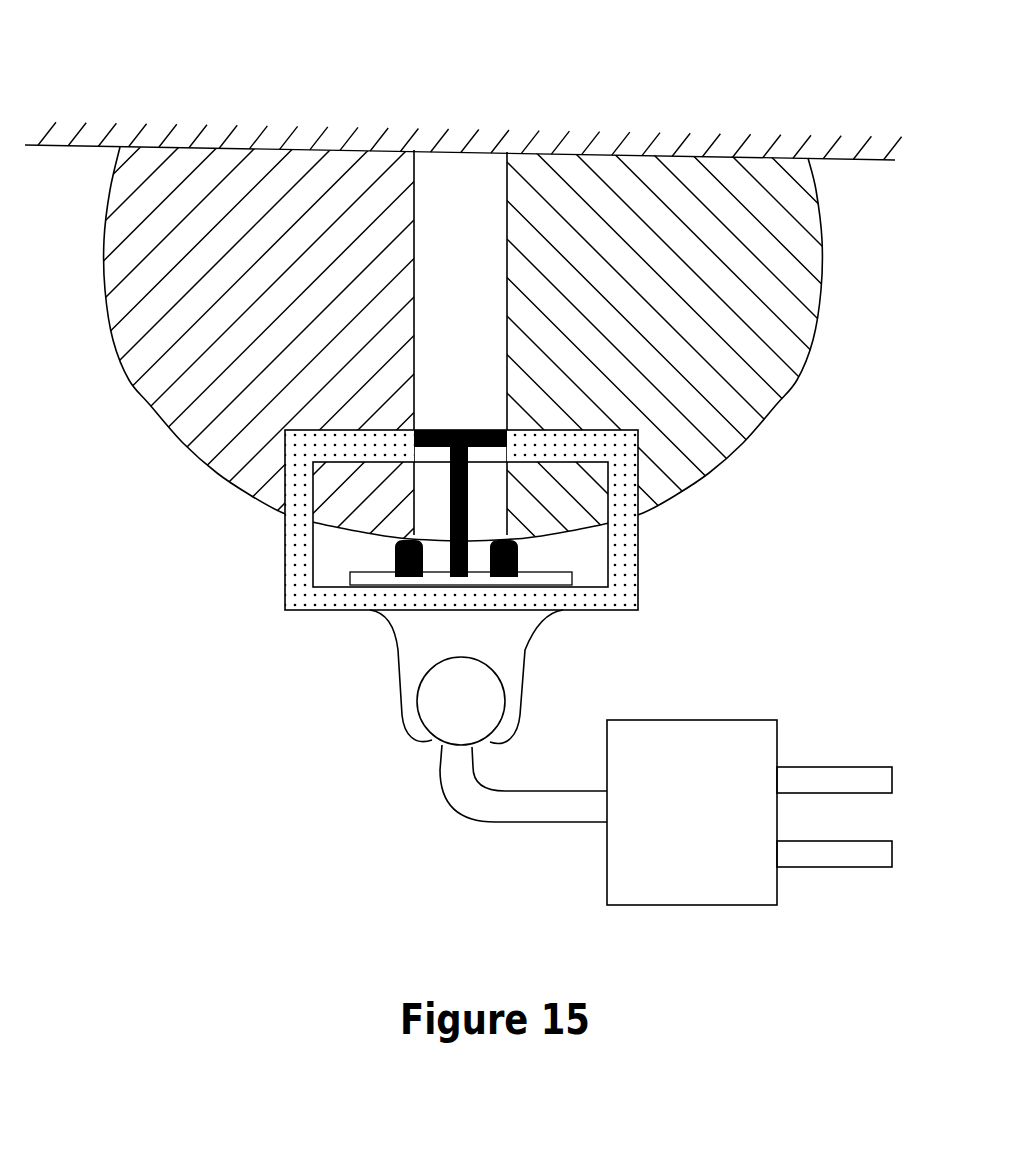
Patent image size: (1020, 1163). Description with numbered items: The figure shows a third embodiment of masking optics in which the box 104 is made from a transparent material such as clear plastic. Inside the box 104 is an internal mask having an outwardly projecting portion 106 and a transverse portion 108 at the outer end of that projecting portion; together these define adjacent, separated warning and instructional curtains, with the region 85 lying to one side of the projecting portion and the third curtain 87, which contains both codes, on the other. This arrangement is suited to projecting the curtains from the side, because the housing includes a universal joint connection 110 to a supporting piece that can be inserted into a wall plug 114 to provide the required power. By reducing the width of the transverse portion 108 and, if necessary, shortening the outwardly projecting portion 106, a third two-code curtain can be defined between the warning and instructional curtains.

The first tissue/body section 85 is at (270, 223).
The third curtain 87 is at (610, 222).
The box 104 is at (283, 590).
The outwardly projecting portion 106 is at (472, 497).
The transverse portion 108 is at (471, 428).
The universal joint connection 110 is at (423, 728).
The wall plug 114 is at (738, 718).